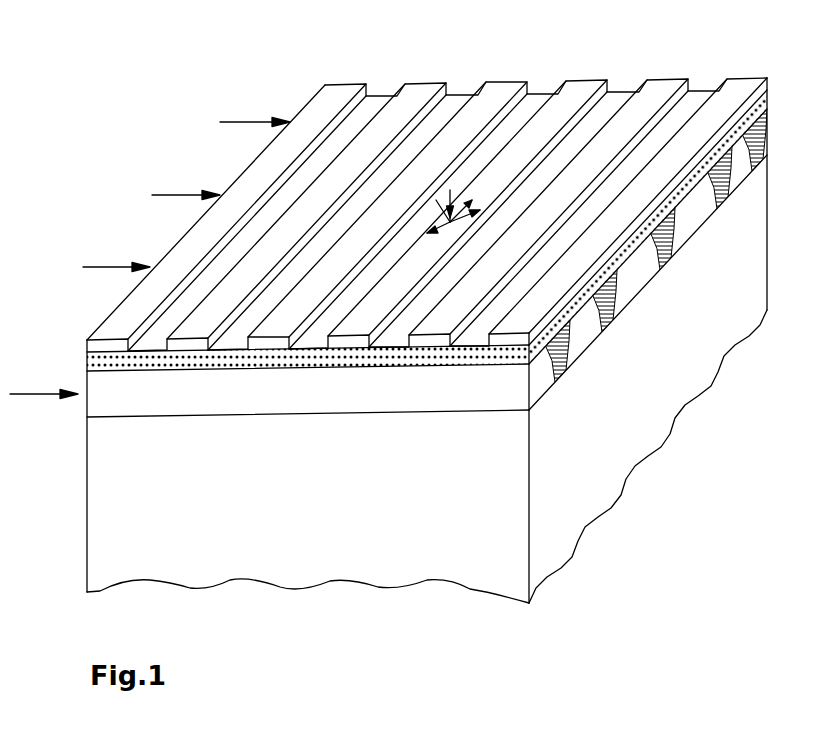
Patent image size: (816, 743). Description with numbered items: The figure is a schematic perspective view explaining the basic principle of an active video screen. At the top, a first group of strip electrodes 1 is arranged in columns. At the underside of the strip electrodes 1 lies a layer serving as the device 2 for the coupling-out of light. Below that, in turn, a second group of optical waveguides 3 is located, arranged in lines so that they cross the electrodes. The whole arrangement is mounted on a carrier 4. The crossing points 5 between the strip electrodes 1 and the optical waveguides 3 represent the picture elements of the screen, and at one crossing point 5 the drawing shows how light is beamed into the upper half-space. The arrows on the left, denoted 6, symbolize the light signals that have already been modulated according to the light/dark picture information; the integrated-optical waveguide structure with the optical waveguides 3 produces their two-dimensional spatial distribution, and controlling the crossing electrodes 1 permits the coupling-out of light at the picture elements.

The strip electrodes 1 is at (352, 85).
The device for the coupling-out of light 2 is at (100, 365).
The optical waveguides 3 is at (742, 184).
The carrier 4 is at (112, 526).
The crossing points 5 is at (452, 224).
The incident light 6 is at (152, 195).